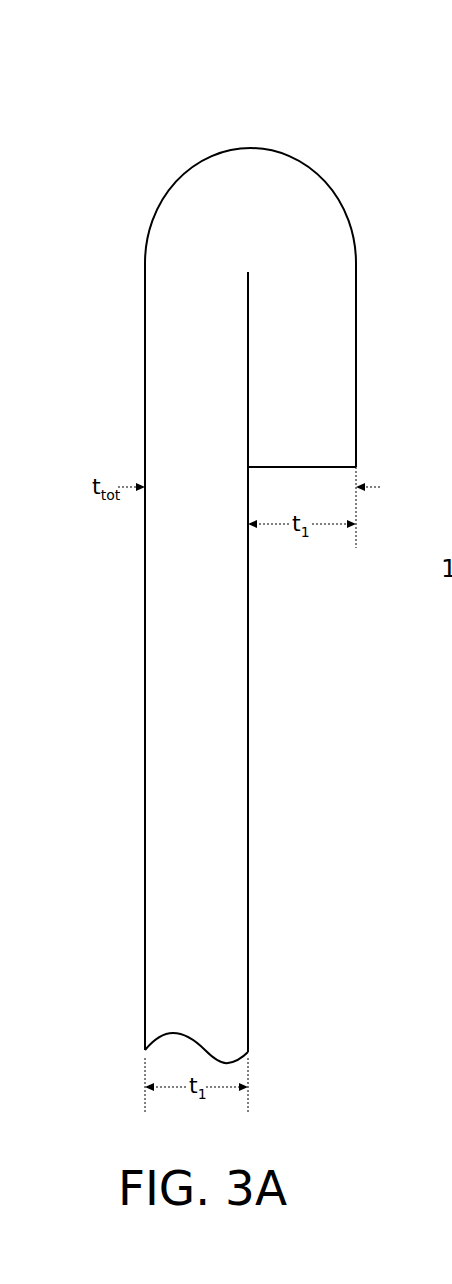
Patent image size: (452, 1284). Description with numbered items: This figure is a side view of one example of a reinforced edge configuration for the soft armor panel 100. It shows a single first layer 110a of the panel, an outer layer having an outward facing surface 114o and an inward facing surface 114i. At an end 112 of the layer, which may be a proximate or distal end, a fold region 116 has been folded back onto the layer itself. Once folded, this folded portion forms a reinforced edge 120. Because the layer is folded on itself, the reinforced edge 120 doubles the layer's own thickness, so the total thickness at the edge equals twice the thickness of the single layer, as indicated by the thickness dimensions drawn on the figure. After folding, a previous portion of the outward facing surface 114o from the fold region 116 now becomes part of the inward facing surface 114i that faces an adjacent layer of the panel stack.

The soft armor panel 100 is at (124, 58).
The first layer 110a is at (162, 203).
The end 112 is at (257, 122).
The outward facing surface 114o is at (145, 356).
The inward facing surface 114i is at (248, 672).
The fold region 116 is at (357, 431).
The reinforced edge 120 is at (391, 329).